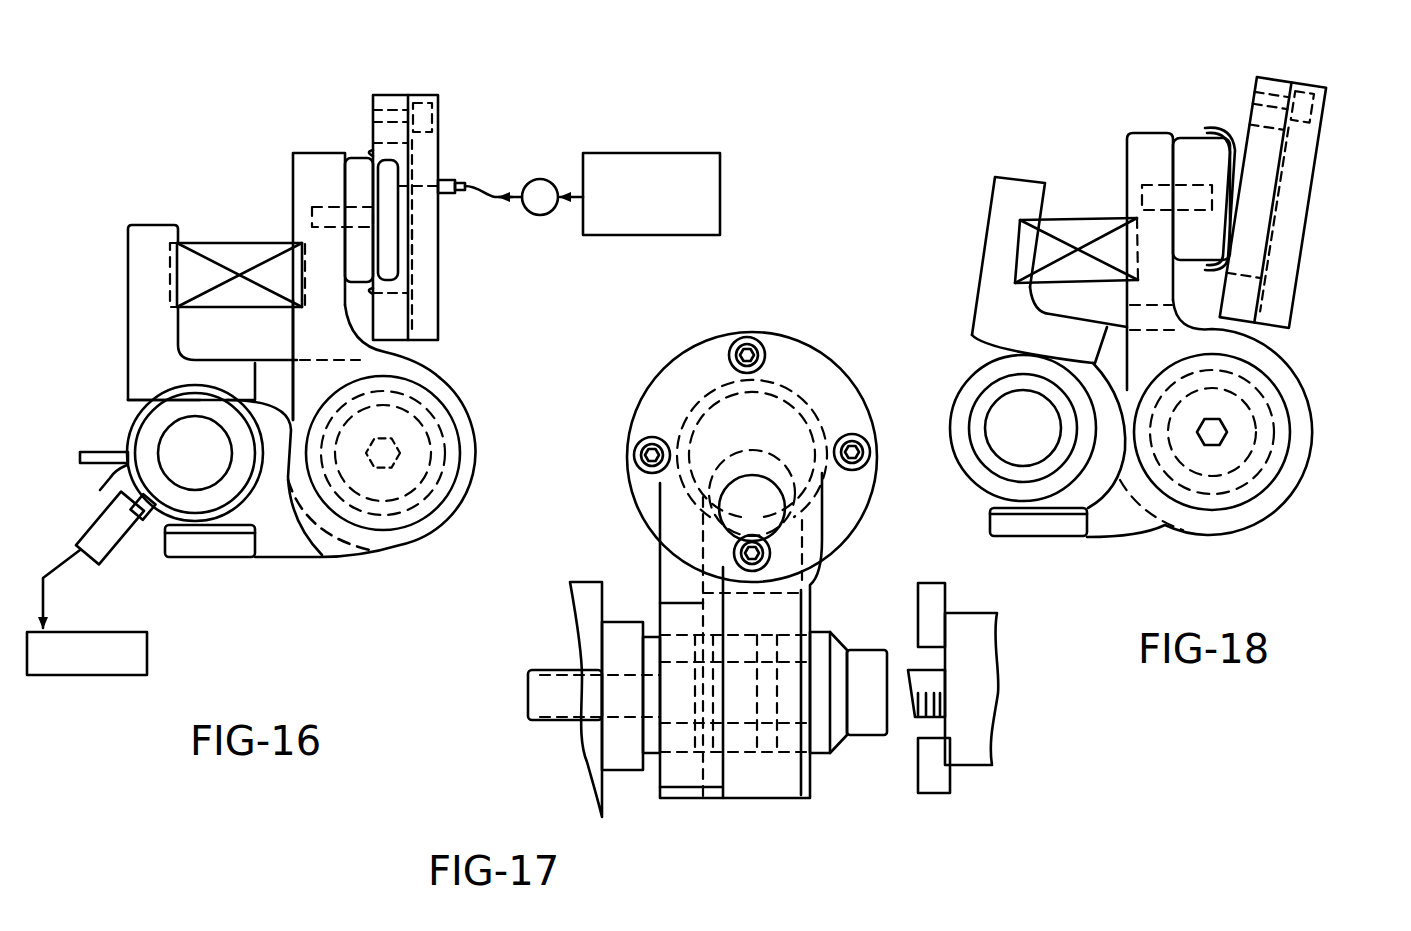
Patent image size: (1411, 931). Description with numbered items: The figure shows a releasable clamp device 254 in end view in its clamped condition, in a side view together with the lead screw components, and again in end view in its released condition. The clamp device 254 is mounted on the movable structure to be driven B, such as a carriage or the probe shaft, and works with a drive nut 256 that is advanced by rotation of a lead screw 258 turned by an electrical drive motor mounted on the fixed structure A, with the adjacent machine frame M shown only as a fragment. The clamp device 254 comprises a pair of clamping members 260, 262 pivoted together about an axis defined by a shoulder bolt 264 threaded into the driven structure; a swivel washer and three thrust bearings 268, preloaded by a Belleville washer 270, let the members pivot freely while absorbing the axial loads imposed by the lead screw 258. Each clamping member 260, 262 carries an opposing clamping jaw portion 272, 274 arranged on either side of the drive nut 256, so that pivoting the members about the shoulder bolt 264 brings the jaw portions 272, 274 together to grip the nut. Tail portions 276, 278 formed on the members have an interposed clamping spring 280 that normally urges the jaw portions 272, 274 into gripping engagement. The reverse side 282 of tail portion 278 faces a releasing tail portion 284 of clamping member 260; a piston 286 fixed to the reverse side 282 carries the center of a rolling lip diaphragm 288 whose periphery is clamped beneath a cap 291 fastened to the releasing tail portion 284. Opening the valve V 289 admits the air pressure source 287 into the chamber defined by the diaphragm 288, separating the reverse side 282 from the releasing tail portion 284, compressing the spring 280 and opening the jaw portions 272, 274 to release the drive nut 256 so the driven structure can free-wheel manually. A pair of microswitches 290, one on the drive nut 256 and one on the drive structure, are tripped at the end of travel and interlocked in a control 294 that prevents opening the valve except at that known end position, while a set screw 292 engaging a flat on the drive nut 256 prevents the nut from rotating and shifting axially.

In FIG. 16, the releasable clamp device 254 is at (223, 126).
In FIG. 16, the drive nut 256 is at (124, 430).
In FIG. 18, the drive nut 256 is at (965, 470).
In FIG. 16, the lead screw 258 is at (226, 479).
In FIG. 18, the lead screw 258 is at (984, 409).
In FIG. 16, the clamping member 260 is at (106, 222).
In FIG. 16, the clamping member 262 is at (312, 150).
In FIG. 18, the clamping member 262 is at (1169, 261).
In FIG. 16, the shoulder bolt 264 is at (383, 453).
In FIG. 17, the shoulder bolt 264 is at (870, 738).
In FIG. 18, the shoulder bolt 264 is at (1228, 480).
In FIG. 17, the thrust bearings 268 is at (648, 773).
In FIG. 17, the Belleville washer 270 is at (840, 640).
In FIG. 16, the clamping jaw portion 272 is at (140, 408).
In FIG. 18, the clamping jaw portion 272 is at (980, 343).
In FIG. 16, the clamping jaw portion 274 is at (241, 525).
In FIG. 18, the clamping jaw portion 274 is at (1057, 502).
In FIG. 16, the tail portion 276 is at (126, 270).
In FIG. 18, the tail portion 276 is at (990, 193).
In FIG. 16, the tail portion 278 is at (292, 178).
In FIG. 16, the clamping spring 280 is at (253, 210).
In FIG. 18, the clamping spring 280 is at (1075, 213).
In FIG. 16, the reverse side 282 is at (355, 323).
In FIG. 16, the releasing tail portion 284 is at (390, 95).
In FIG. 18, the releasing tail portion 284 is at (1328, 60).
In FIG. 16, the piston 286 is at (360, 155).
In FIG. 18, the piston 286 is at (1201, 199).
In FIG. 16, the air pressure source 287 is at (710, 152).
In FIG. 16, the rolling lip diaphragm 288 is at (412, 242).
In FIG. 18, the rolling lip diaphragm 288 is at (1220, 125).
In FIG. 16, the valve V 289 is at (540, 179).
In FIG. 16, the microswitches 290 is at (108, 553).
In FIG. 16, the cap 291 is at (440, 150).
In FIG. 16, the set screw 292 is at (112, 470).
In FIG. 16, the control 294 is at (78, 675).
In FIG. 17, the structure A is at (932, 791).
In FIG. 17, the movable structure to be driven B is at (597, 575).
In FIG. 17, the machine frame M is at (970, 767).